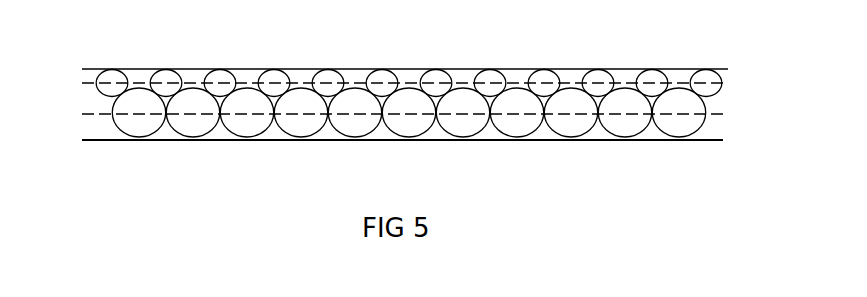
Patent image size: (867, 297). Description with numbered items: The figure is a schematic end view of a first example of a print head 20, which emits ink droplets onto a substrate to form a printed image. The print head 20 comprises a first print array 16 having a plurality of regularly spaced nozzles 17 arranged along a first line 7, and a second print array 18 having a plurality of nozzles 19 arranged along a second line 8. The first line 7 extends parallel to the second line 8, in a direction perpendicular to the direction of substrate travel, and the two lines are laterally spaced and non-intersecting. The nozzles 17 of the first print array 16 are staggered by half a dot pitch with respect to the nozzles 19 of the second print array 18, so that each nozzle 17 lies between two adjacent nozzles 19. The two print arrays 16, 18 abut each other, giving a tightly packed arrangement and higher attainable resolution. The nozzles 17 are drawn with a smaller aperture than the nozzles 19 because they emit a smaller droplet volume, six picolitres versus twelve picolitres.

The first line 7 is at (517, 82).
The second line 8 is at (248, 113).
The first print array 16 is at (379, 62).
The nozzles 17 is at (380, 77).
The second print array 18 is at (428, 143).
The nozzles 19 is at (617, 122).
The print head 20 is at (247, 69).